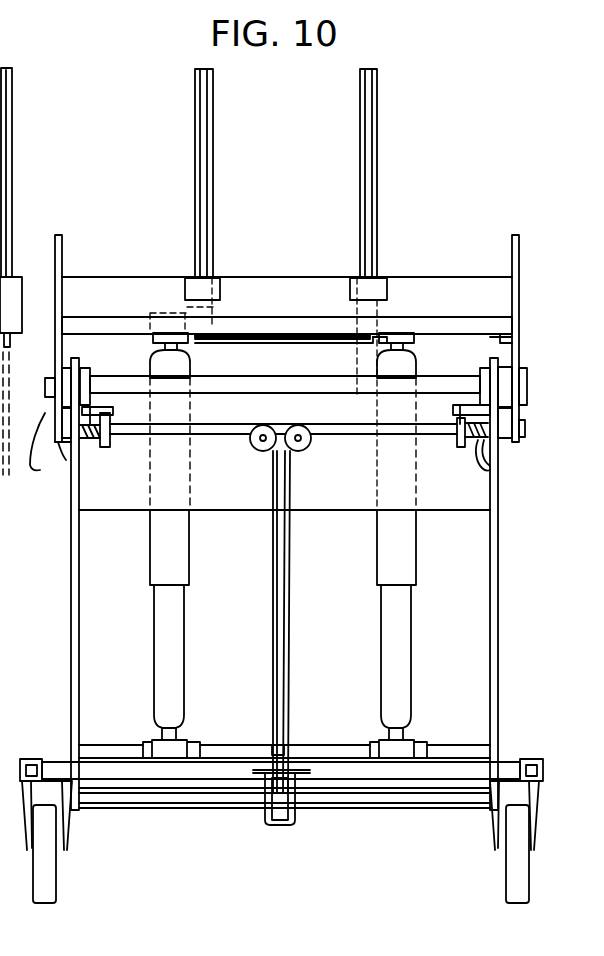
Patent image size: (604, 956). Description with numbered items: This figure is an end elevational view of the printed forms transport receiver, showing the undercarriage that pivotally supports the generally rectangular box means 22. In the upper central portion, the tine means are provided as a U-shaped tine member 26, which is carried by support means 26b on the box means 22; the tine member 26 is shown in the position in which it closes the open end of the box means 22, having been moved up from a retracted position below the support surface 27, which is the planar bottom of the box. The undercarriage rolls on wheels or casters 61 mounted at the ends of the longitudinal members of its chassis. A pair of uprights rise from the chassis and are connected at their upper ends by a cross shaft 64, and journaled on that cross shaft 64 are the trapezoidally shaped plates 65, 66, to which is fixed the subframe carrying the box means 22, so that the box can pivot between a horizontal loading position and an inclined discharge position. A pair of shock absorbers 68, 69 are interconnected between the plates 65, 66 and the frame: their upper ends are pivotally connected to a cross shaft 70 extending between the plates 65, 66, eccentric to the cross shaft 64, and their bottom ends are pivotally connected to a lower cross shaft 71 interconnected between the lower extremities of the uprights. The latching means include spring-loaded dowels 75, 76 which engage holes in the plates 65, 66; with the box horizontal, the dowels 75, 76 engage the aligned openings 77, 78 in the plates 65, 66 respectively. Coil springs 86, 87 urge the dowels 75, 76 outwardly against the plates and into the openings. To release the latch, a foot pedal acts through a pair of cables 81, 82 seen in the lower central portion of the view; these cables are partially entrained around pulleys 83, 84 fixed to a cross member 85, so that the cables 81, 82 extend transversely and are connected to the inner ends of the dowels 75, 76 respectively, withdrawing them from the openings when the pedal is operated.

The box means 22 is at (524, 300).
The U-shaped tine member 26 is at (12, 186).
The support means 26b is at (364, 278).
The support surface 27 is at (458, 276).
The casters 61 is at (54, 880).
The cross shaft 64 is at (445, 388).
The trapezoidally shaped plate 65 is at (518, 334).
The trapezoidally shaped plate 66 is at (58, 332).
The shock absorber 68 is at (377, 574).
The shock absorber 69 is at (189, 574).
The cross shaft 70 is at (123, 332).
The lower cross shaft 71 is at (223, 752).
The spring-loaded dowel 75 is at (520, 440).
The spring-loaded dowel 76 is at (60, 442).
The opening 77 is at (518, 415).
The opening 78 is at (32, 440).
The cable 81 is at (290, 672).
The cable 82 is at (273, 660).
The pulley 83 is at (305, 448).
The pulley 84 is at (256, 448).
The cross member 85 is at (468, 502).
The coil spring 86 is at (498, 470).
The coil spring 87 is at (82, 450).